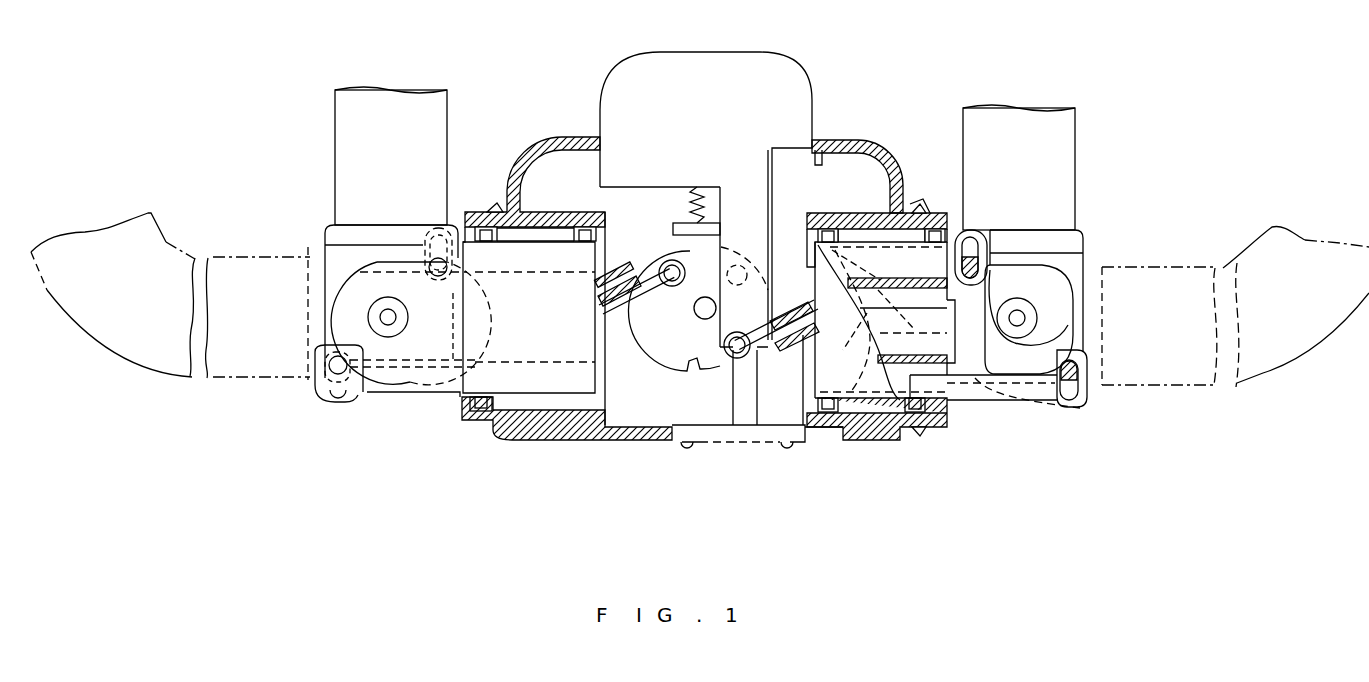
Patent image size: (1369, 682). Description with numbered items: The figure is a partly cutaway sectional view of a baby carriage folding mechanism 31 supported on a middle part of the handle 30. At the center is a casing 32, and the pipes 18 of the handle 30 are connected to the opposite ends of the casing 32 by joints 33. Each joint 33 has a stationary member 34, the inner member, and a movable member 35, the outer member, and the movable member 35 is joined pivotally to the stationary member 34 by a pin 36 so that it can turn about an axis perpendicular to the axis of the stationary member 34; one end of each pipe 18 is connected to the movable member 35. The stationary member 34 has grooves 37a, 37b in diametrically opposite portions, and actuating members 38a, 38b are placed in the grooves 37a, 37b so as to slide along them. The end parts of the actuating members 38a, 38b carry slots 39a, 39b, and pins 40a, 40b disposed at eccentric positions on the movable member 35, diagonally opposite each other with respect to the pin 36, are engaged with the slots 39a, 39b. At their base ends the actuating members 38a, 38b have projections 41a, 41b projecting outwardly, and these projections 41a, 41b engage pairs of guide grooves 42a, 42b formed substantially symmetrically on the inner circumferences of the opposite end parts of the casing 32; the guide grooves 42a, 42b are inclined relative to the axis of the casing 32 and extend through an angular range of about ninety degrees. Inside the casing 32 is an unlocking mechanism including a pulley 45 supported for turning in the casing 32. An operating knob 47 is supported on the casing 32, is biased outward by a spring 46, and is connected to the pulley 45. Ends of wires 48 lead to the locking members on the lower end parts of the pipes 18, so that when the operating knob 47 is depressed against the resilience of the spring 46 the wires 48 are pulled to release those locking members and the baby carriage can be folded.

The pipe 18 is at (345, 150).
The handle 30 is at (418, 450).
The baby carriage folding mechanism 31 is at (565, 448).
The casing 32 is at (642, 445).
The joint 33 is at (370, 375).
The stationary member 34 is at (422, 353).
The movable member 35 is at (328, 245).
The pin 36 is at (388, 317).
The groove 37a is at (862, 280).
The groove 37b is at (885, 428).
The actuating member 38a is at (902, 258).
The actuating member 38b is at (975, 398).
The slot 39a is at (968, 255).
The slot 39b is at (1066, 407).
The pin 40a is at (983, 240).
The pin 40b is at (1078, 385).
The projection 41a is at (587, 228).
The projection 41b is at (480, 414).
The guide groove 42a is at (945, 336).
The guide groove 42b is at (847, 445).
The pulley 45 is at (698, 356).
The spring 46 is at (682, 206).
The operating knob 47 is at (778, 82).
The wire 48 is at (652, 283).